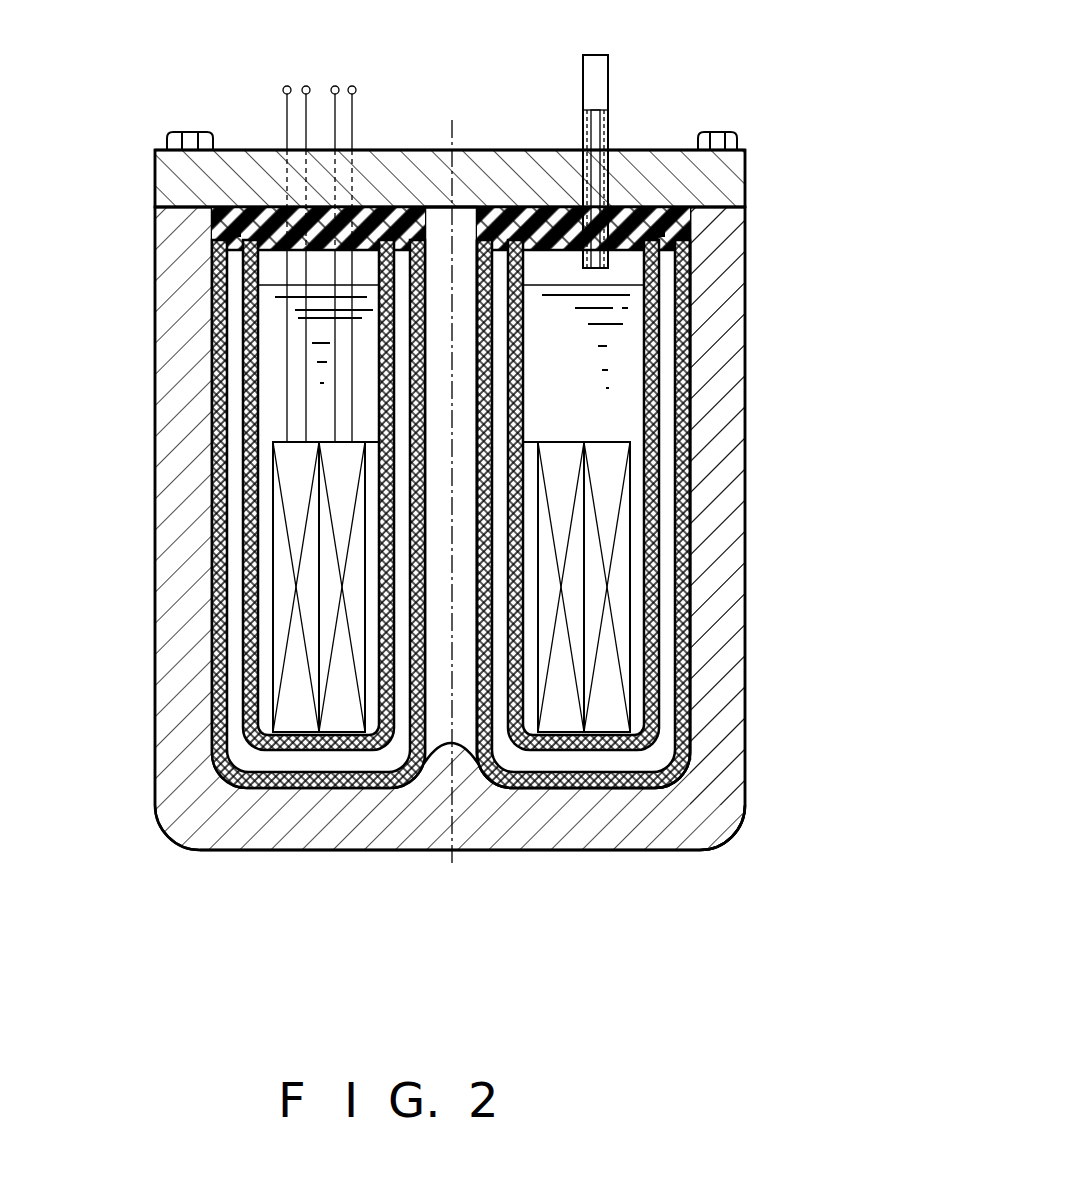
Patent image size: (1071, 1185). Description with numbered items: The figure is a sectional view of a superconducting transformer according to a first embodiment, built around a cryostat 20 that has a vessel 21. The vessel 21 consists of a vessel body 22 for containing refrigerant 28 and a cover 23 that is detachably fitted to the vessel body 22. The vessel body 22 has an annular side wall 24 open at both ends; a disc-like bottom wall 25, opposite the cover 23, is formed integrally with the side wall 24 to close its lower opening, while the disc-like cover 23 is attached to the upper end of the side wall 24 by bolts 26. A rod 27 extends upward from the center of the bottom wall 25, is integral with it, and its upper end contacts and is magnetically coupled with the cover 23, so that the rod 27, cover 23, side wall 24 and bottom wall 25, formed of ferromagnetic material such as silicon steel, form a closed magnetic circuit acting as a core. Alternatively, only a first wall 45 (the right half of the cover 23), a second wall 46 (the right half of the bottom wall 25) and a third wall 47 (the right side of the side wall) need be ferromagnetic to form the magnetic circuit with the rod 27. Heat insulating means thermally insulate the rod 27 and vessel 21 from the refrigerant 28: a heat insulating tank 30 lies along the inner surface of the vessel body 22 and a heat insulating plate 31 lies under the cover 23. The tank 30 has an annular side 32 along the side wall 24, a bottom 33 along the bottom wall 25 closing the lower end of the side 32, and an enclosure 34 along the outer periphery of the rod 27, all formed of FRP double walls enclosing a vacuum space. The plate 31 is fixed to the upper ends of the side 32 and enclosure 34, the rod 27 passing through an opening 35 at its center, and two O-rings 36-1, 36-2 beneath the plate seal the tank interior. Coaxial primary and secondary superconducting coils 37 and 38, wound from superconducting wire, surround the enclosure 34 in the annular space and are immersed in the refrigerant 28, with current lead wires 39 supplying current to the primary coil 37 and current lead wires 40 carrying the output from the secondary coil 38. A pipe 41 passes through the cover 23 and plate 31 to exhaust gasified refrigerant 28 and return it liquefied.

The cryostat 20 is at (834, 273).
The vessel 21 is at (826, 176).
The vessel body 22 is at (754, 243).
The cover 23 is at (748, 193).
The side wall 24 is at (750, 452).
The bottom wall 25 is at (330, 852).
The bolts 26 is at (188, 131).
The rod 27 is at (465, 412).
The refrigerant 28 is at (632, 400).
The heat insulating tank 30 is at (694, 307).
The heat insulating plate 31 is at (362, 213).
The side 32 is at (680, 572).
The bottom 33 is at (575, 783).
The enclosure 34 is at (490, 388).
The opening 35 is at (436, 252).
The O-ring 36-1 is at (232, 236).
The O-ring 36-2 is at (498, 233).
The primary superconducting coil 37 is at (337, 468).
The secondary superconducting coil 38 is at (293, 610).
The current lead wires 39 is at (323, 70).
The current lead wires 40 is at (312, 70).
The pipe 41 is at (596, 136).
The first wall 45 is at (673, 158).
The second wall 46 is at (660, 830).
The third wall 47 is at (735, 520).